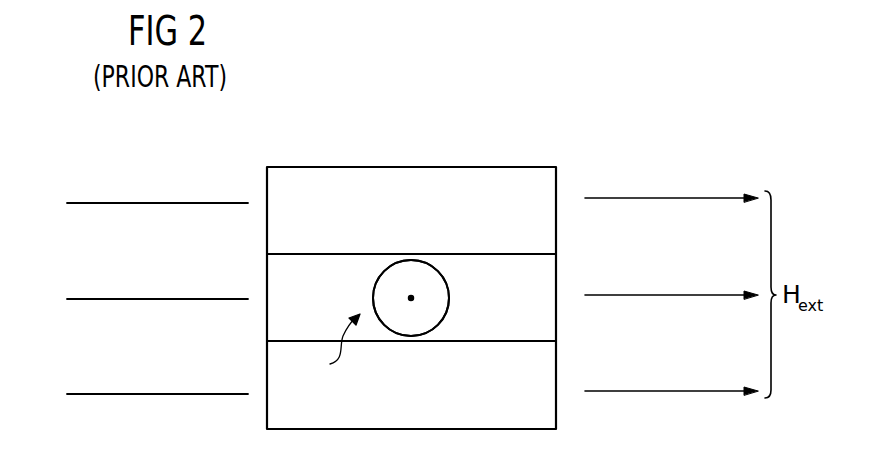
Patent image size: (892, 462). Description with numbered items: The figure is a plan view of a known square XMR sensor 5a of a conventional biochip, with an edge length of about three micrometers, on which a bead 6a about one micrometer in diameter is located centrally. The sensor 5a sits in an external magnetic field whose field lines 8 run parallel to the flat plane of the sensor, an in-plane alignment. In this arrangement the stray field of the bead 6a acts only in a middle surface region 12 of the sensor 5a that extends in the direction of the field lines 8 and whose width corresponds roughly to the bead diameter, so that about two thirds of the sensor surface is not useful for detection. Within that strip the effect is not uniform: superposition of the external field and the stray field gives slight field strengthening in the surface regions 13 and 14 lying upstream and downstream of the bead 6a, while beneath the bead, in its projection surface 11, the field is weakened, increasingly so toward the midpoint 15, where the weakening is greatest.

The XMR sensor 5a is at (448, 166).
The surface region 13 is at (291, 300).
The surface region 14 is at (540, 300).
The projection surface 11 is at (392, 285).
The bead 6a is at (450, 308).
The midpoint 15 is at (412, 298).
The middle surface region 12 is at (332, 348).
The field lines 8 is at (187, 300).